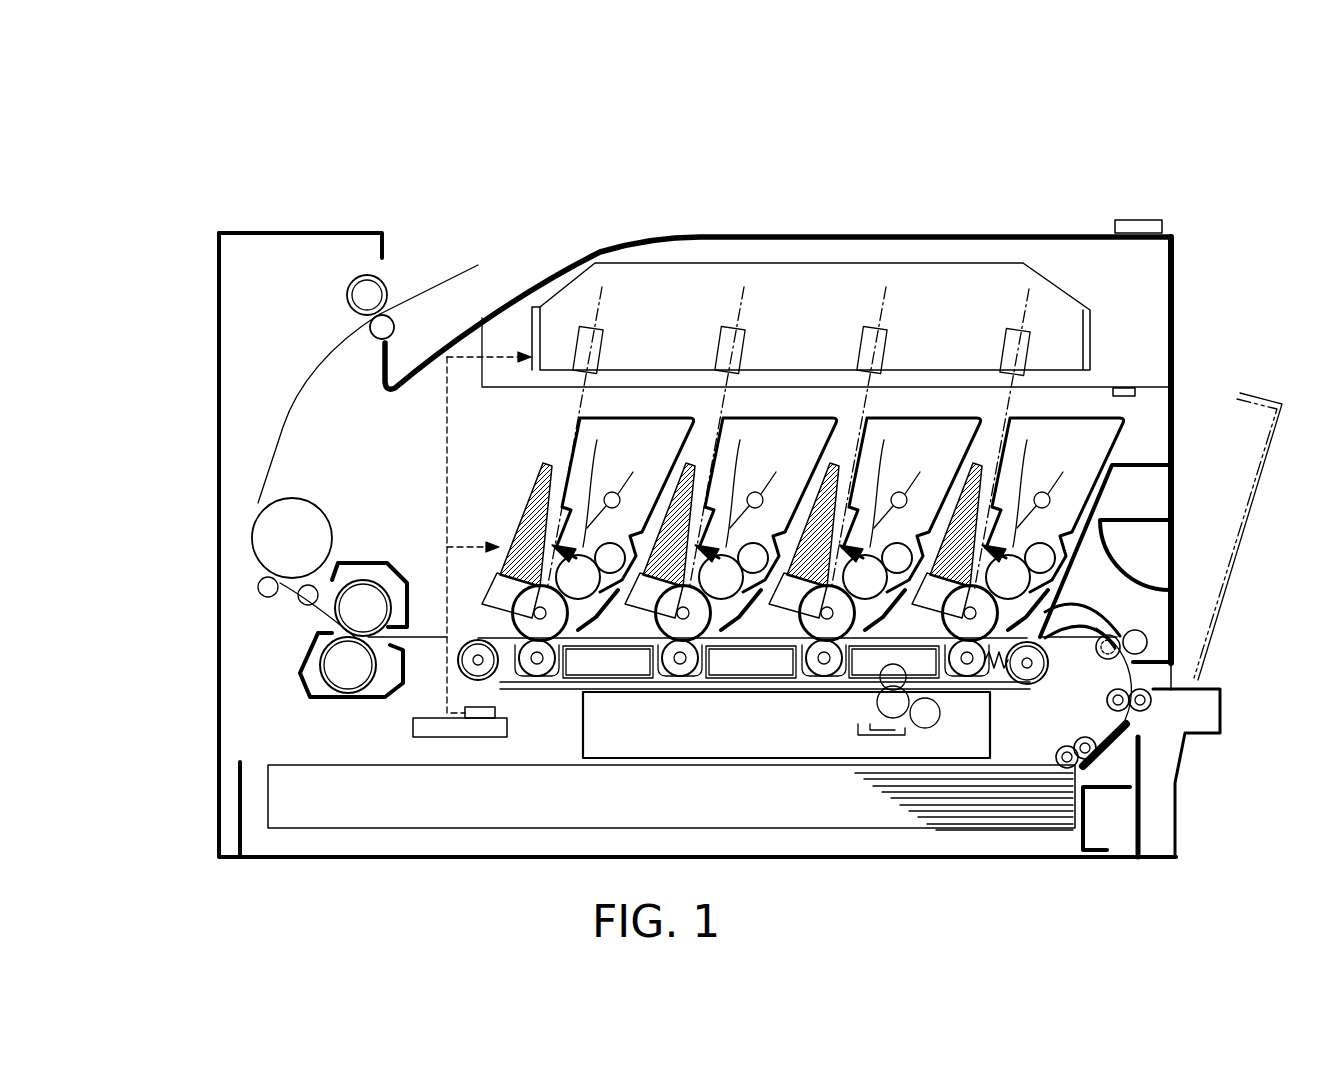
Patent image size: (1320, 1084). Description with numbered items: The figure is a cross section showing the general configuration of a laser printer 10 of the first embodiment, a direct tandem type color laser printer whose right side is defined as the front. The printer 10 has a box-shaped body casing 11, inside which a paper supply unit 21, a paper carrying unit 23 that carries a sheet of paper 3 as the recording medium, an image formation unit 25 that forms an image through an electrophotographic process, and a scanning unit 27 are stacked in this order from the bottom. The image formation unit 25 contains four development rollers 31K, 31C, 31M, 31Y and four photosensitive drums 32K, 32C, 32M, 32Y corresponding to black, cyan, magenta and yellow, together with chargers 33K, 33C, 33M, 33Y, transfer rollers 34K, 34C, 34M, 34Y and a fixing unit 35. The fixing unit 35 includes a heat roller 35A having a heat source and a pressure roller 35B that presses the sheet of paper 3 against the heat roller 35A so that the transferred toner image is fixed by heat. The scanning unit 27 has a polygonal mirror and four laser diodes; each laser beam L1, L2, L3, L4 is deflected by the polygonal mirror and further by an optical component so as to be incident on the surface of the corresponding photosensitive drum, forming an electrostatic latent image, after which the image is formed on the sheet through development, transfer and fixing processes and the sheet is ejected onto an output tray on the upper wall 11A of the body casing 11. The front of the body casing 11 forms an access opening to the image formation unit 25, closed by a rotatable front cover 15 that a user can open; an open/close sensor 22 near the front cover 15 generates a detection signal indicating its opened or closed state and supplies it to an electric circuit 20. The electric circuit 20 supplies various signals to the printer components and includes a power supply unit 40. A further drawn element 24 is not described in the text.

The laser printer 10 is at (296, 222).
The body casing 11 is at (219, 567).
The upper wall 11A is at (705, 233).
The sheet of paper 3 is at (275, 452).
The scanning unit 27 is at (837, 267).
The operation unit 24 is at (1133, 219).
The electric circuit 20 is at (1112, 226).
The power supply unit 40 is at (480, 707).
The open/close sensor 22 is at (1128, 397).
The front cover 15 is at (1247, 527).
The paper carrying unit 23 is at (1053, 682).
The paper supply unit 21 is at (843, 836).
The image formation unit 25 is at (498, 524).
The development roller 31Y is at (597, 440).
The development roller 31M is at (740, 440).
The development roller 31C is at (884, 440).
The development roller 31K is at (1027, 440).
The photosensitive drum 32Y is at (548, 642).
The photosensitive drum 32M is at (670, 642).
The photosensitive drum 32C is at (815, 642).
The photosensitive drum 32K is at (962, 642).
The charger 33Y is at (490, 583).
The charger 33M is at (633, 583).
The charger 33C is at (777, 583).
The charger 33K is at (920, 583).
The transfer roller 34Y is at (536, 668).
The transfer roller 34M is at (681, 676).
The transfer roller 34C is at (825, 676).
The transfer roller 34K is at (972, 678).
The fixing unit 35 is at (360, 562).
The heat roller 35A is at (372, 598).
The pressure roller 35B is at (342, 672).
The laser beam L1 is at (1027, 307).
The laser beam L2 is at (892, 303).
The laser beam L3 is at (748, 303).
The laser beam L4 is at (605, 303).